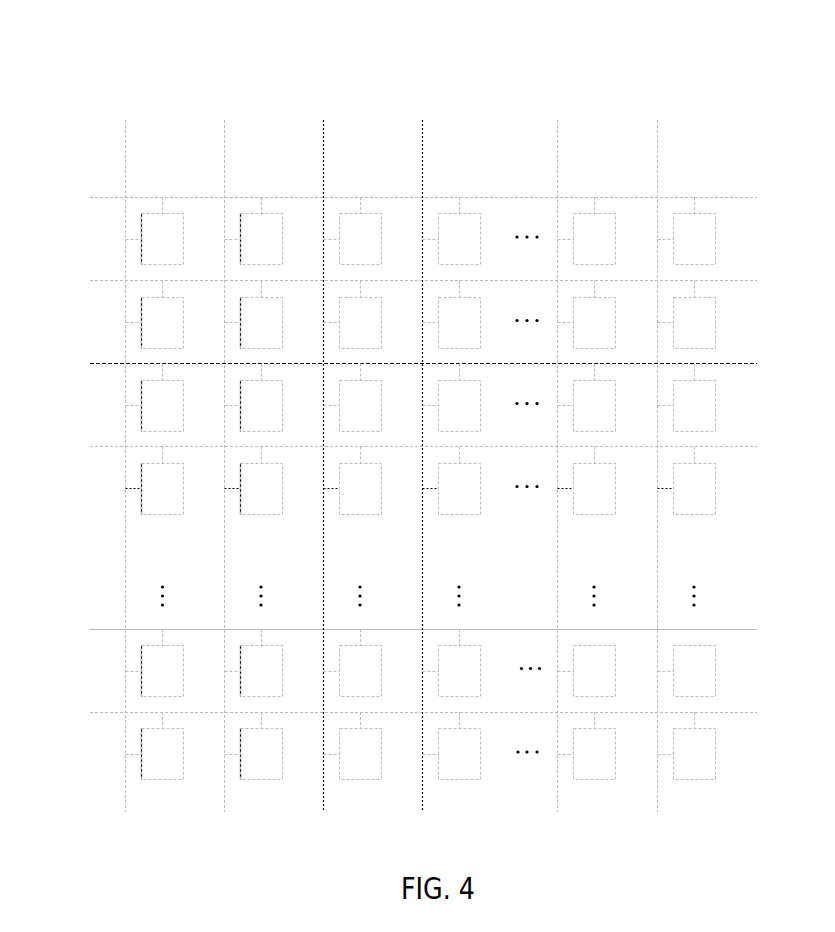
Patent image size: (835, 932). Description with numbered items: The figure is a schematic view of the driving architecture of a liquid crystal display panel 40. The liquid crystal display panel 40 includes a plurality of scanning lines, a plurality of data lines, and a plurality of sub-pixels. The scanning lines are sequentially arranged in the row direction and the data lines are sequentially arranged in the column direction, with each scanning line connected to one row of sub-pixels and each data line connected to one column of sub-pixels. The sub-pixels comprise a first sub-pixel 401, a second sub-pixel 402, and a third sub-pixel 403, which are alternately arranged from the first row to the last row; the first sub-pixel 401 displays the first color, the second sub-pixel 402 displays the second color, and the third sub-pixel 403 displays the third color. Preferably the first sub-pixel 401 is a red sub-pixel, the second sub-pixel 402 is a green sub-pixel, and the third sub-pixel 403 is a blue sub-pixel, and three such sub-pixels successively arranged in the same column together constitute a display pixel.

The liquid crystal display panel 40 is at (758, 44).
The first sub-pixel 401 is at (715, 239).
The second sub-pixel 402 is at (715, 322).
The third sub-pixel 403 is at (715, 406).